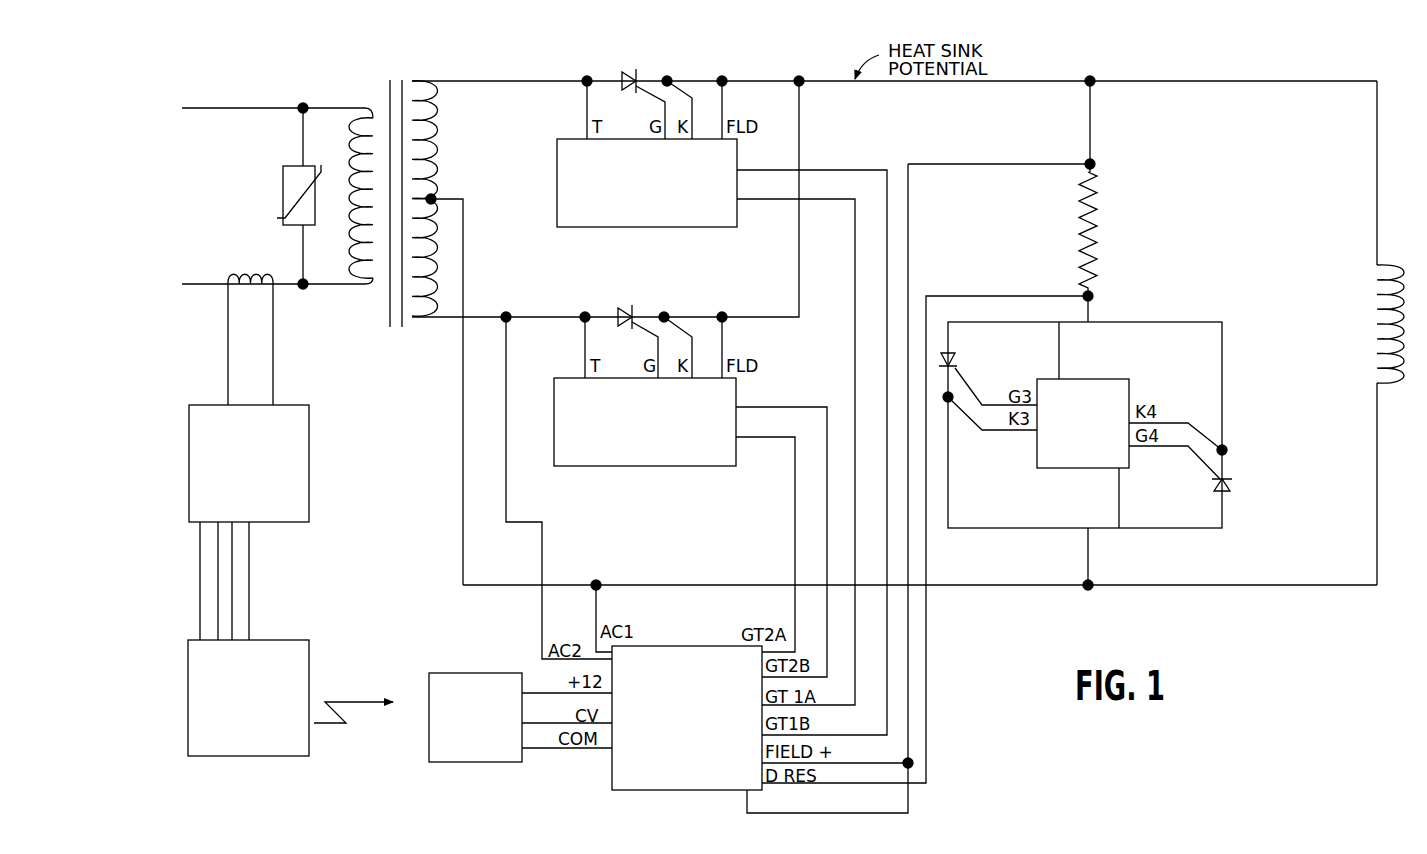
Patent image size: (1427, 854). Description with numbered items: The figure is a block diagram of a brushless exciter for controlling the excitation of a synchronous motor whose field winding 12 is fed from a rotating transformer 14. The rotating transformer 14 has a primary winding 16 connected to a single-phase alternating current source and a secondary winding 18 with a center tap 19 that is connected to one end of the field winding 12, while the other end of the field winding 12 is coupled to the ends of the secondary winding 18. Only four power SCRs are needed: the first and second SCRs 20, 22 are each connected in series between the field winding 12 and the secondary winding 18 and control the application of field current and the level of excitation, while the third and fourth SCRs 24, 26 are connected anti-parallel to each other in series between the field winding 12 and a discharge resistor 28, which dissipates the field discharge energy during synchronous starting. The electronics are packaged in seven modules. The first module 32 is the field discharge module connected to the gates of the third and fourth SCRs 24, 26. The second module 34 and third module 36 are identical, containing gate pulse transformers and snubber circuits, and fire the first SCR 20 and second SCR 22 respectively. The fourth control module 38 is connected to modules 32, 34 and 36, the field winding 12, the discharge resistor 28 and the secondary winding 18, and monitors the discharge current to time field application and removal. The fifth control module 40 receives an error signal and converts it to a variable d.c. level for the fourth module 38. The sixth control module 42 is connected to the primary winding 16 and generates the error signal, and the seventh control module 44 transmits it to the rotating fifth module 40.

The field winding 12 is at (1377, 306).
The rotating transformer 14 is at (383, 78).
The primary winding 16 is at (357, 131).
The secondary winding 18 is at (433, 106).
The center tap 19 is at (437, 194).
The first SCR 20 is at (633, 70).
The second SCR 22 is at (629, 306).
The third SCR 24 is at (957, 357).
The fourth SCR 26 is at (1232, 490).
The discharge resistor 28 is at (1098, 213).
The first module 32 is at (1083, 423).
The second module 34 is at (647, 183).
The third control module 36 is at (645, 422).
The fourth control module 38 is at (687, 718).
The fifth control module 40 is at (475, 717).
The sixth control module 42 is at (249, 463).
The seventh control module 44 is at (248, 698).